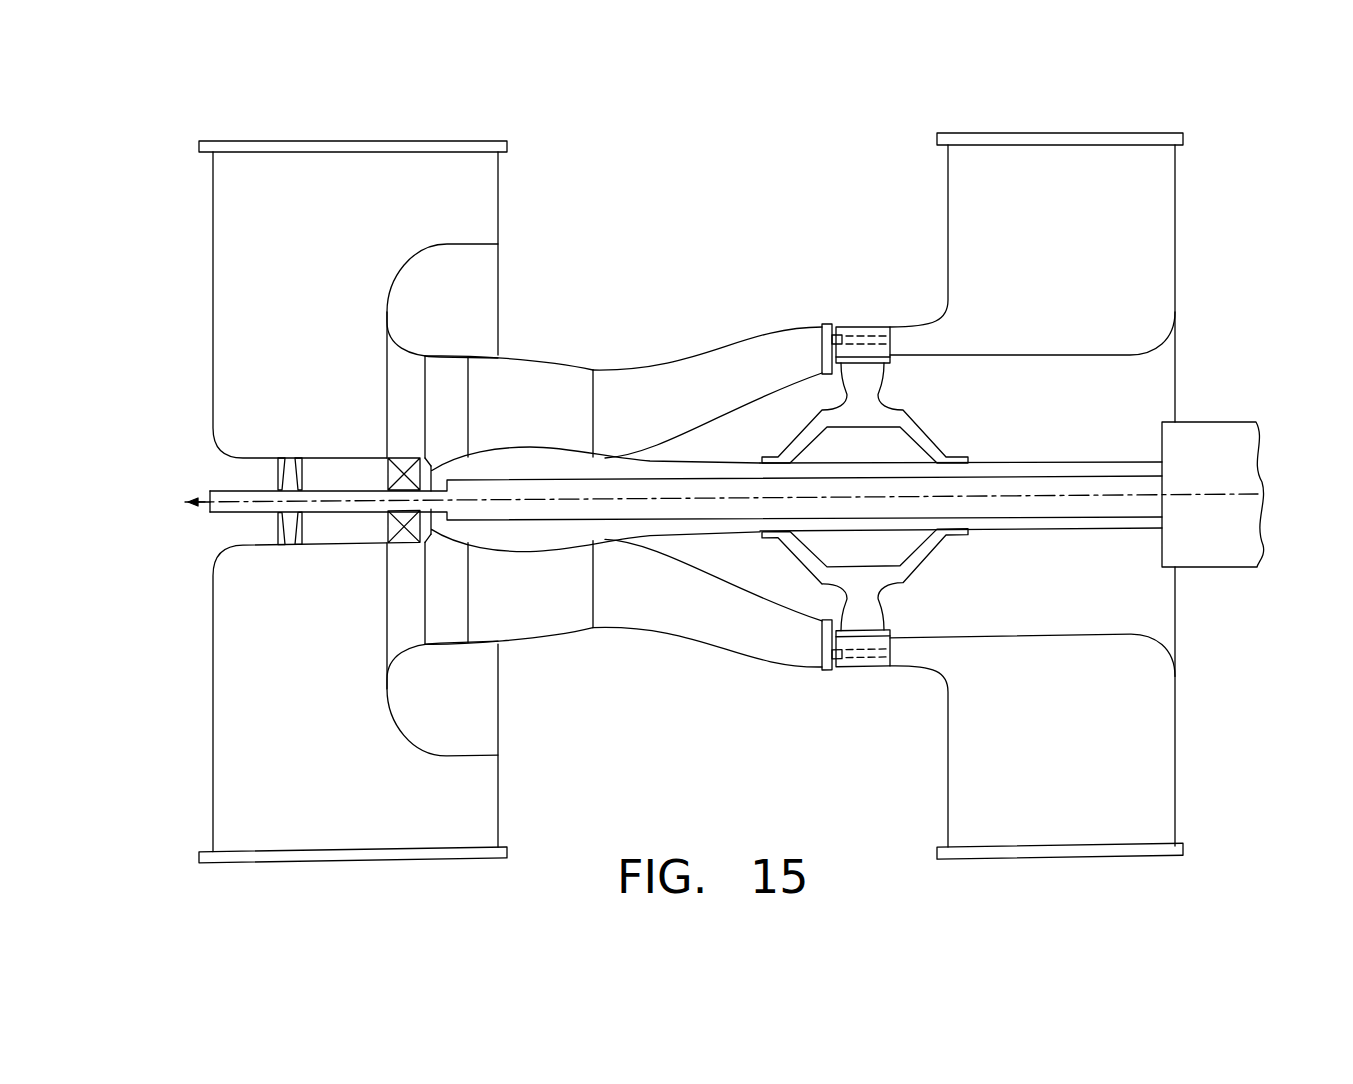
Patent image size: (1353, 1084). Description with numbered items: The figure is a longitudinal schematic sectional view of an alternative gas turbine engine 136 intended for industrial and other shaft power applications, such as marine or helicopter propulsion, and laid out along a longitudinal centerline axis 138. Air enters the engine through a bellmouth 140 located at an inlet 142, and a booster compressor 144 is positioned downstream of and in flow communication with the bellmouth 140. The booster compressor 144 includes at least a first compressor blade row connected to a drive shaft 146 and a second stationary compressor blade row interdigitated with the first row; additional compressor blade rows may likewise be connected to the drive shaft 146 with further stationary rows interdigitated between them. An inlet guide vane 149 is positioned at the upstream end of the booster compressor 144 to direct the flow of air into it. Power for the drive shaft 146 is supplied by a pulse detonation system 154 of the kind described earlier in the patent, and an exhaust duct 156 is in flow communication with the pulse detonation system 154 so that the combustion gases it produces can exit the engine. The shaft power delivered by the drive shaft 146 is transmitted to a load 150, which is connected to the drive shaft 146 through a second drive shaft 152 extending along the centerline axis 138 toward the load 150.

The gas turbine engine 136 is at (250, 104).
The longitudinal centerline axis 138 is at (1012, 497).
The bellmouth 140 is at (421, 250).
The inlet 142 is at (311, 284).
The booster compressor 144 is at (568, 388).
The drive shaft 146 is at (567, 457).
The inlet guide vane 149 is at (397, 352).
The load 150 is at (1208, 567).
The second drive shaft 152 is at (997, 466).
The pulse detonation system 154 is at (858, 314).
The exhaust duct 156 is at (948, 222).